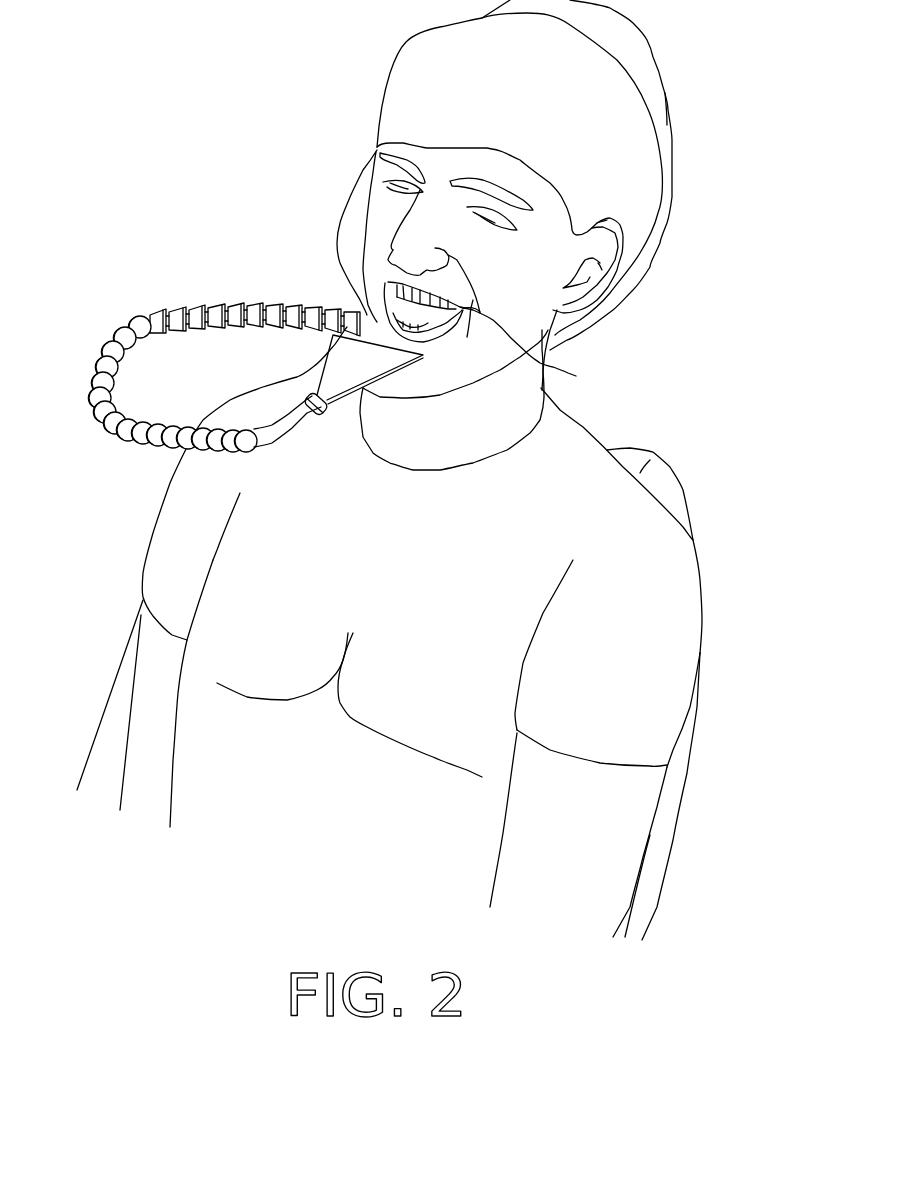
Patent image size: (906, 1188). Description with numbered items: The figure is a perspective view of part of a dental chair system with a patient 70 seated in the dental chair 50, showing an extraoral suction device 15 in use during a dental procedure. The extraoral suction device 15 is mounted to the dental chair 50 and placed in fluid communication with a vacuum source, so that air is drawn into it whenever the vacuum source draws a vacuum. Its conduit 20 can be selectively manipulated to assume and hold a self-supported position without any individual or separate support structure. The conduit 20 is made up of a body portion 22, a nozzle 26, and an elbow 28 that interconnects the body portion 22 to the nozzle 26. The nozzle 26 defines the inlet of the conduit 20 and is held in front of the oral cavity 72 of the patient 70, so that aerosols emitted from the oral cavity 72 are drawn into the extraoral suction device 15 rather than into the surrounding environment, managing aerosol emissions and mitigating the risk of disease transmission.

The extraoral suction device 15 is at (250, 280).
The conduit 20 is at (205, 313).
The body portion 22 is at (140, 325).
The nozzle 26 is at (343, 362).
The elbow 28 is at (280, 437).
The dental chair 50 is at (673, 470).
The patient 70 is at (580, 422).
The oral cavity 72 is at (534, 348).